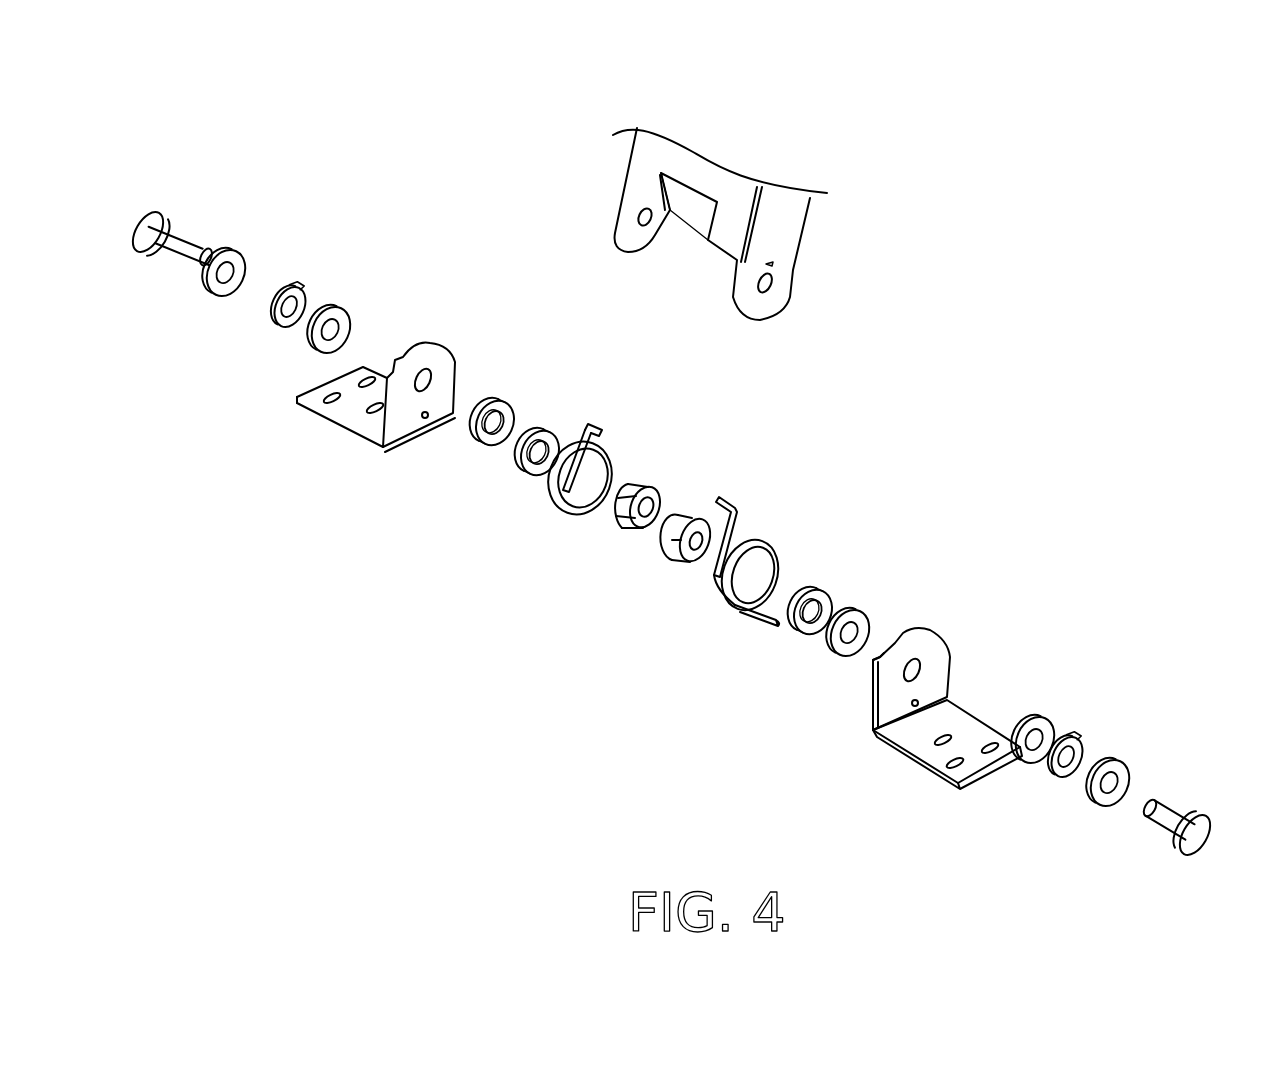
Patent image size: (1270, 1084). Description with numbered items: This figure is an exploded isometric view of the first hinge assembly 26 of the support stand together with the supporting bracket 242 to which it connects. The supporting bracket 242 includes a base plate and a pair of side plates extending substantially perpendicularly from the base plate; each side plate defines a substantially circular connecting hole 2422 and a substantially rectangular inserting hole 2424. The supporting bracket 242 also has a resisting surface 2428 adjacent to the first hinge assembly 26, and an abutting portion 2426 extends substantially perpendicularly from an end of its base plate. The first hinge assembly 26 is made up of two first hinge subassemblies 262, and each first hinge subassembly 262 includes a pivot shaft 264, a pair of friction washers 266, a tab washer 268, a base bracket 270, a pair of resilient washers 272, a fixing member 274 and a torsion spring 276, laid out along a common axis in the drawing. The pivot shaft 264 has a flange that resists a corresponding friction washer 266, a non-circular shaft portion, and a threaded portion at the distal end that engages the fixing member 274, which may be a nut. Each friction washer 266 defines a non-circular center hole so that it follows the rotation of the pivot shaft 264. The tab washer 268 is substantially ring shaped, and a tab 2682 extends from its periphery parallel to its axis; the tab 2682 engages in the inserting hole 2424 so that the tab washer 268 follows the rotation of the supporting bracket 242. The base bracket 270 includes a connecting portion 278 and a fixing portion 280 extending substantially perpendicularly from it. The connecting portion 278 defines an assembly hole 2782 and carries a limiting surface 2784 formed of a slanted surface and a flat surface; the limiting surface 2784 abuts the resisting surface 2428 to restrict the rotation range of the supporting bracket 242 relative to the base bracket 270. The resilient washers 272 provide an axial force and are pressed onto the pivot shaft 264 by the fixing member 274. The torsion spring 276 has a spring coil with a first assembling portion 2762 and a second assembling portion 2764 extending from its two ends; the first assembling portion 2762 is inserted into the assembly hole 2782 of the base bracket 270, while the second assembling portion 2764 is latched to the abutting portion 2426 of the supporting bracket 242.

The first hinge assembly 26 is at (440, 140).
The supporting bracket 242 is at (797, 215).
The connecting hole 2422 is at (770, 292).
The inserting hole 2424 is at (770, 264).
The abutting portion 2426 is at (663, 210).
The resisting surface 2428 is at (620, 218).
The first hinge subassembly 262 is at (235, 127).
The pivot shaft 264 is at (190, 233).
The friction washer 266 is at (240, 260).
The tab washer 268 is at (298, 290).
The tab 2682 is at (1075, 730).
The base bracket 270 is at (433, 357).
The resilient washer 272 is at (553, 437).
The fixing member 274 is at (655, 493).
The torsion spring 276 is at (600, 462).
The first assembling portion 2762 is at (760, 622).
The second assembling portion 2764 is at (723, 487).
The connecting portion 278 is at (933, 650).
The assembly hole 2782 is at (910, 705).
The limiting surface 2784 is at (880, 658).
The fixing portion 280 is at (977, 733).